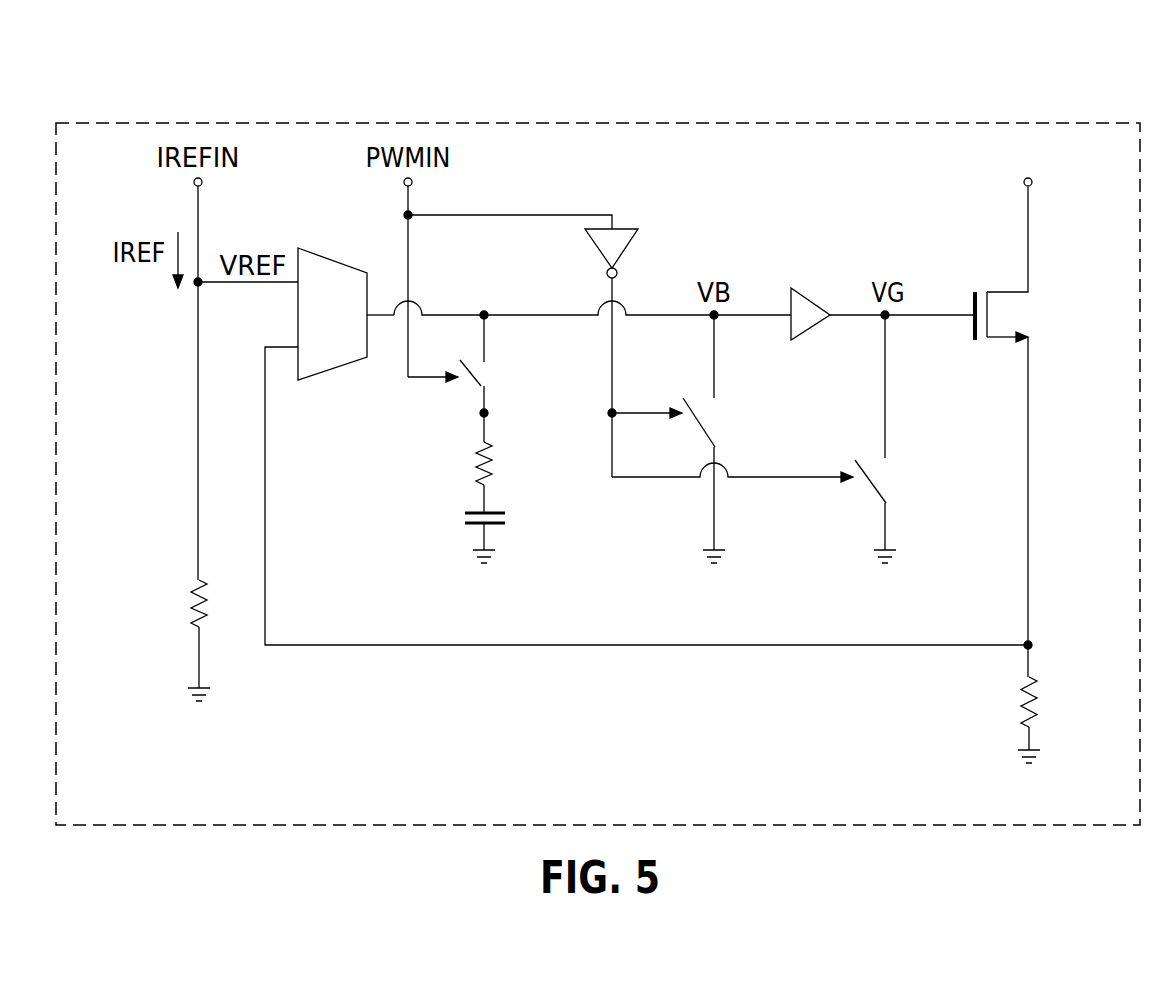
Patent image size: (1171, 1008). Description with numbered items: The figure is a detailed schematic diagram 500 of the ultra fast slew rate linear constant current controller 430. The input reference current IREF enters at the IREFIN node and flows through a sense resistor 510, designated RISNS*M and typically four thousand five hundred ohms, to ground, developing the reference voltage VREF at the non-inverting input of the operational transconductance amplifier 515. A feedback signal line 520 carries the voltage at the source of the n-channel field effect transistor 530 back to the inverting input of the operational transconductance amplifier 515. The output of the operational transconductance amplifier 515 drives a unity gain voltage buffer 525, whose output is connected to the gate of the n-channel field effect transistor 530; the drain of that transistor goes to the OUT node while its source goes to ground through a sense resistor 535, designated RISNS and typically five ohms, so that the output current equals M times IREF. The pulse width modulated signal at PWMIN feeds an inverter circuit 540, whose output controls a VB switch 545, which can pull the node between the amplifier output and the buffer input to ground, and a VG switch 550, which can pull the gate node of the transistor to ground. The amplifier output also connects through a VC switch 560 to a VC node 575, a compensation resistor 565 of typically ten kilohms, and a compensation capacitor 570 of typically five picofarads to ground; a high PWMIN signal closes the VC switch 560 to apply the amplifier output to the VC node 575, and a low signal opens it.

The schematic diagram 500 is at (1048, 46).
The linear constant current controller 430 is at (738, 123).
The sense resistor 510 is at (193, 612).
The operational transconductance amplifier 515 is at (345, 266).
The feedback signal line 520 is at (308, 647).
The unity gain voltage buffer 525 is at (813, 302).
The n-channel field effect transistor 530 is at (972, 330).
The sense resistor 535 is at (1022, 698).
The inverter circuit 540 is at (637, 233).
The VB switch 545 is at (700, 427).
The VG switch 550 is at (872, 490).
The VC switch 560 is at (480, 377).
The compensation resistor 565 is at (478, 467).
The compensation capacitor 570 is at (472, 525).
The VC node 575 is at (480, 411).